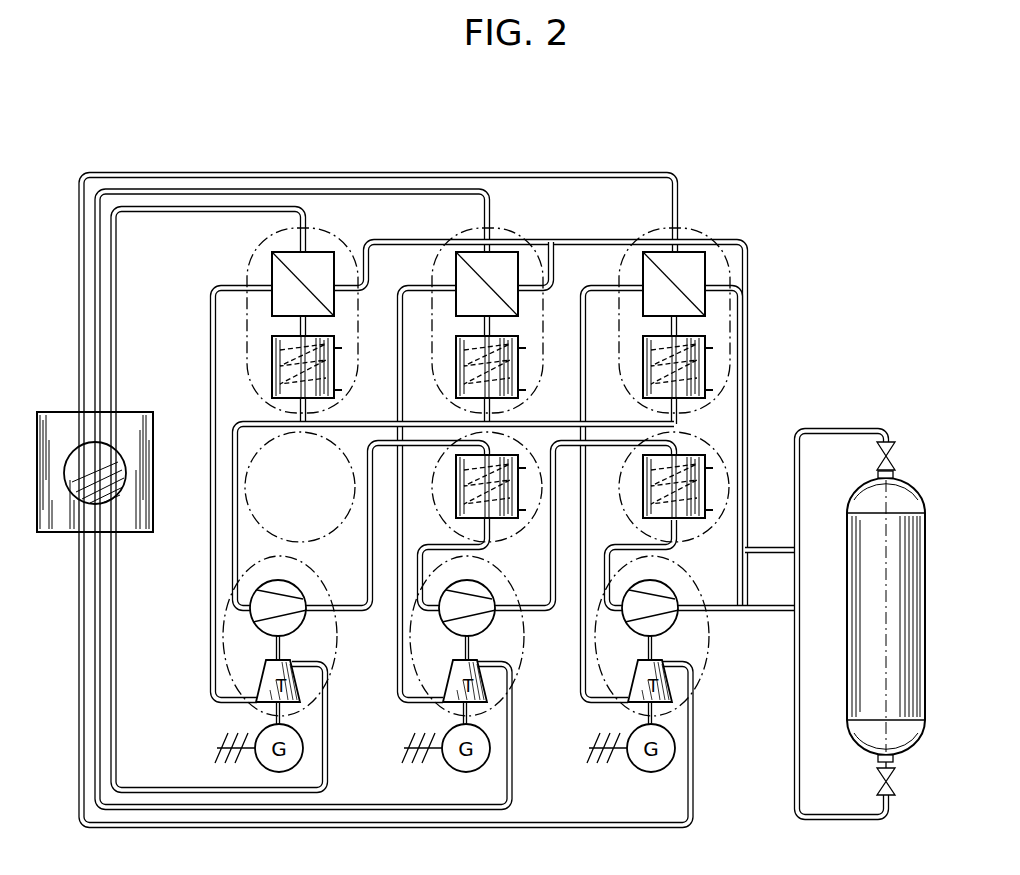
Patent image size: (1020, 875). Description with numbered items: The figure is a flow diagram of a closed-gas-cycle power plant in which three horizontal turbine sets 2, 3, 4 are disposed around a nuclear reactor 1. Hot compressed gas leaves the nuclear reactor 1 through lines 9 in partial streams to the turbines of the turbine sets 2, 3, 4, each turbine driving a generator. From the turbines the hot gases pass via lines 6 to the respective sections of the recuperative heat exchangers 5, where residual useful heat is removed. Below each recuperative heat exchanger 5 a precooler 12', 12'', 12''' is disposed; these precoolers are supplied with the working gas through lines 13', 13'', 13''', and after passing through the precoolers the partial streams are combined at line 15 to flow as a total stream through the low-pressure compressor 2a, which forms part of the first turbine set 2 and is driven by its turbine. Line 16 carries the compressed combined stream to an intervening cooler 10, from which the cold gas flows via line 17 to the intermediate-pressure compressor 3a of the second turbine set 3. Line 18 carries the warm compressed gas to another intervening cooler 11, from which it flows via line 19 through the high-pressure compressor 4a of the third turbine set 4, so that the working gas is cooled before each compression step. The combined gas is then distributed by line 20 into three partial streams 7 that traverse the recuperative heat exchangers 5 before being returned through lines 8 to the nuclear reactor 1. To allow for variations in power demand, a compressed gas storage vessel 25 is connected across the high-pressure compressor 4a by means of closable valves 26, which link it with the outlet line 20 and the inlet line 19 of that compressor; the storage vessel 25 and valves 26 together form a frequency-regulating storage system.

The nuclear reactor 1 is at (57, 425).
The first turbine set 2 is at (275, 650).
The low-pressure compressor 2a is at (296, 622).
The second turbine set 3 is at (463, 650).
The intermediate-pressure compressor 3a is at (484, 622).
The third turbine set 4 is at (647, 650).
The high-pressure compressor 4a is at (667, 622).
The recuperative heat exchangers 5 is at (313, 262).
The lines from turbines to recuperators 6 is at (213, 545).
The partial stream lines to recuperators 7 is at (367, 268).
The lines to nuclear reactor 8 is at (267, 207).
The lines from nuclear reactor 9 is at (223, 792).
The intervening cooler 10 is at (464, 487).
The intervening cooler 11 is at (650, 487).
The precooler 12' is at (331, 367).
The precooler 12'' is at (516, 367).
The precooler 12''' is at (720, 367).
The line to precooler 13' is at (347, 323).
The line to precooler 13'' is at (531, 323).
The line to precooler 13''' is at (735, 323).
The line 15 is at (233, 456).
The line 16 is at (372, 580).
The line 17 is at (445, 548).
The line 18 is at (556, 590).
The line 19 is at (632, 548).
The line 20 is at (744, 508).
The compressed gas storage vessel 25 is at (858, 610).
The valves 26 is at (889, 458).